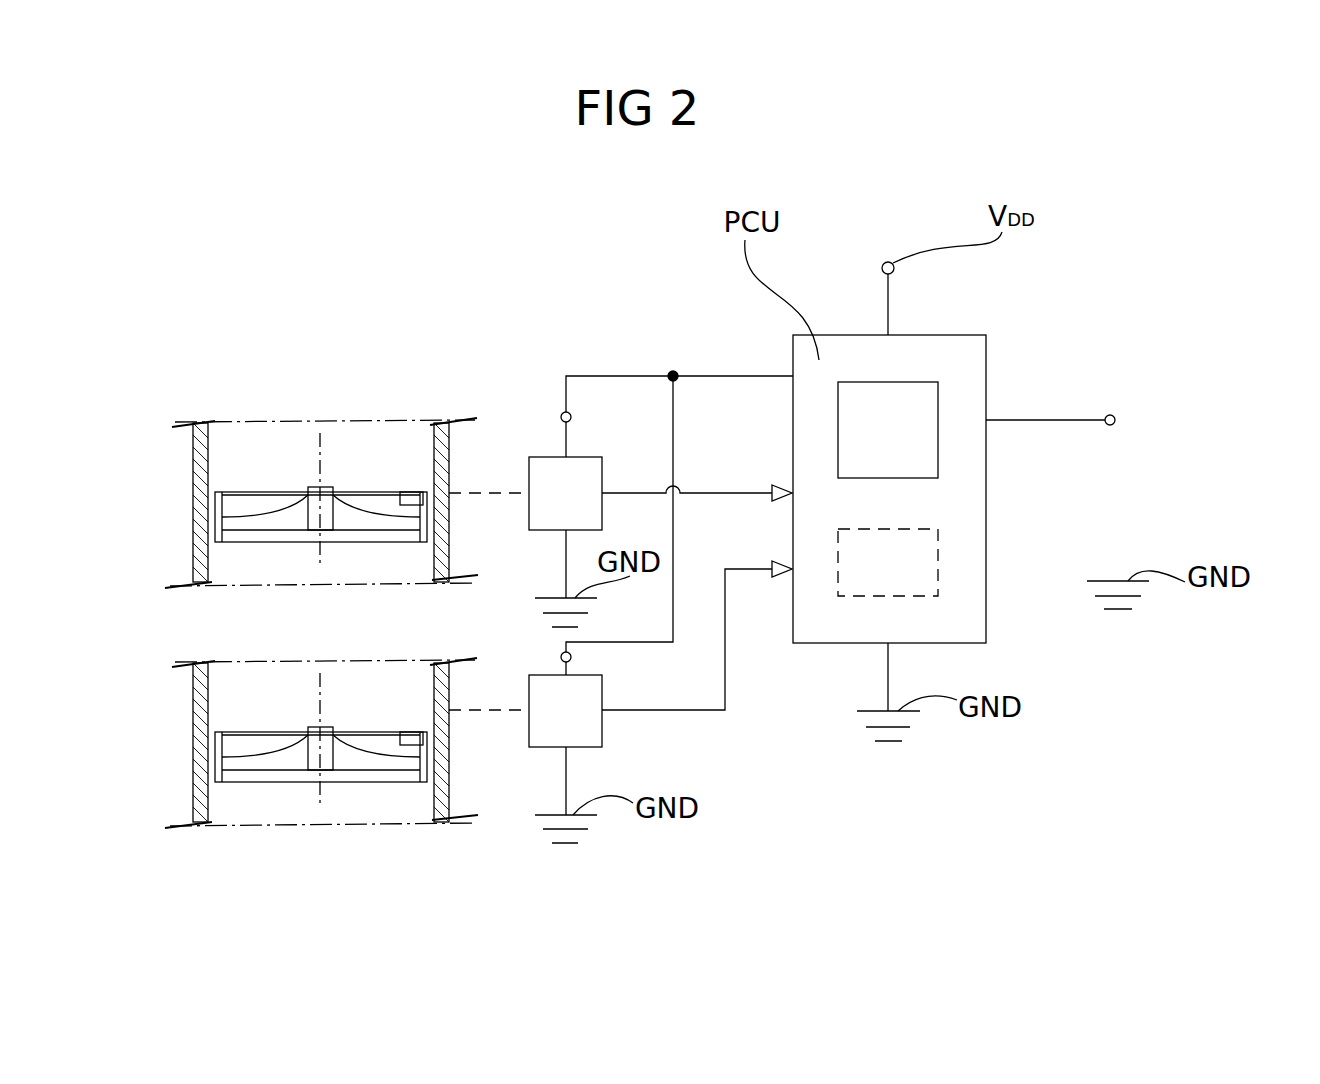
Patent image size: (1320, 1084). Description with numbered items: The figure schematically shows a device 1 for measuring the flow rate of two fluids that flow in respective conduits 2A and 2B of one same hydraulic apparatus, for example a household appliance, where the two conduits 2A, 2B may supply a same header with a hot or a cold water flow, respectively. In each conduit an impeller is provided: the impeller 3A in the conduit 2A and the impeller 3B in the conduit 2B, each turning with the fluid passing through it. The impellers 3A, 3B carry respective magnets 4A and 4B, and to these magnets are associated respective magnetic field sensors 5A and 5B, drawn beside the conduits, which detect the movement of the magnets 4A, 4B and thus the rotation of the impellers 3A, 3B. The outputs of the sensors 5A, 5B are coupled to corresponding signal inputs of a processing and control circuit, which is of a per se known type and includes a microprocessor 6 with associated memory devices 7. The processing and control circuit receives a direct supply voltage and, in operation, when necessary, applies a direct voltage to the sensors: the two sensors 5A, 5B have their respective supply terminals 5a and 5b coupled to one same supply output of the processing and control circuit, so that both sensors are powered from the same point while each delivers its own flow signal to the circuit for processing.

The device 1 is at (1075, 330).
The conduit 2A is at (208, 552).
The conduit 2B is at (208, 805).
The impeller 3A is at (292, 470).
The impeller 3B is at (297, 705).
The magnet 4A is at (414, 497).
The magnet 4B is at (414, 737).
The supply terminal 5a is at (560, 417).
The supply terminal 5b is at (560, 657).
The magnetic field sensor 5A is at (592, 478).
The magnetic field sensor 5B is at (592, 695).
The microprocessor 6 is at (878, 386).
The memory devices 7 is at (870, 530).